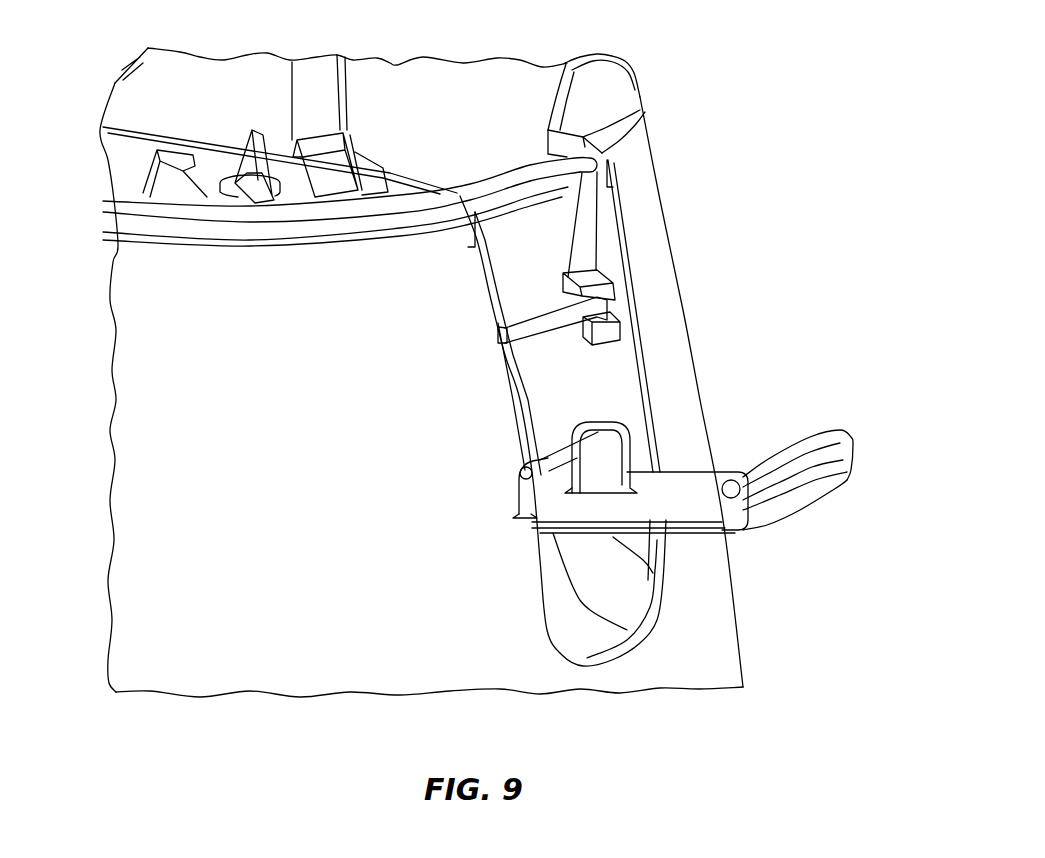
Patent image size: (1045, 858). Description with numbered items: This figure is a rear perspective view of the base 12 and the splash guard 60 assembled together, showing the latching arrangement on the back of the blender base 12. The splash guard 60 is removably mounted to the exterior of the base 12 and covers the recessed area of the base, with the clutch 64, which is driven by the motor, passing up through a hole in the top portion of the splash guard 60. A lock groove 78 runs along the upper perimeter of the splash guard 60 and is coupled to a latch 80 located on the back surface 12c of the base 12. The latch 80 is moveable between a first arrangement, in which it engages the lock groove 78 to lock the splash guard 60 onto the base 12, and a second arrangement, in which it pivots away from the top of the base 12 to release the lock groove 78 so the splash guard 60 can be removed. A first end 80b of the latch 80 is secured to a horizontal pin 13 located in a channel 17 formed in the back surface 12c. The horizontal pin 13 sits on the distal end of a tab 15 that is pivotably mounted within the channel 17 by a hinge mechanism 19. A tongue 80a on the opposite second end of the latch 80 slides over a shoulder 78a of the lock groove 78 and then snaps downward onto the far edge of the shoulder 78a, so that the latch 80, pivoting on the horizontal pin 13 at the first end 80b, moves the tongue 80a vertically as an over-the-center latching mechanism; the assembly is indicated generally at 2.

The hanger assembly 2 is at (692, 453).
The base 12 is at (140, 392).
The back surface 12c is at (532, 675).
The horizontal pin 13 is at (523, 470).
The tab 15 is at (540, 378).
The channel 17 is at (622, 362).
The hinge mechanism 19 is at (623, 293).
The splash guard 60 is at (143, 228).
The clutch 64 is at (175, 195).
The lock groove 78 is at (535, 170).
The shoulder 78a is at (603, 160).
The latch 80 is at (817, 497).
The tongue 80a is at (852, 447).
The first end 80b is at (633, 515).